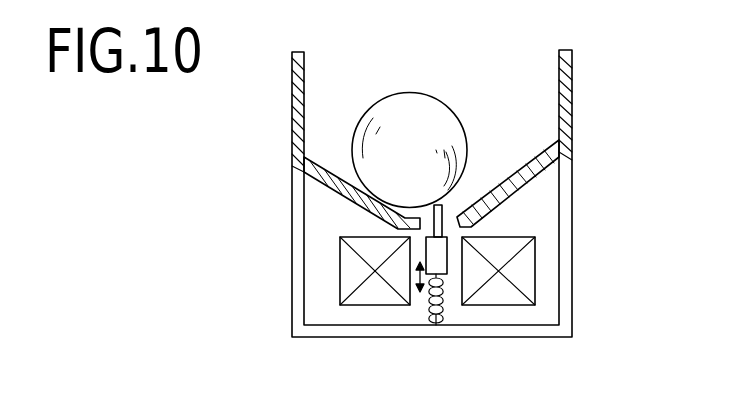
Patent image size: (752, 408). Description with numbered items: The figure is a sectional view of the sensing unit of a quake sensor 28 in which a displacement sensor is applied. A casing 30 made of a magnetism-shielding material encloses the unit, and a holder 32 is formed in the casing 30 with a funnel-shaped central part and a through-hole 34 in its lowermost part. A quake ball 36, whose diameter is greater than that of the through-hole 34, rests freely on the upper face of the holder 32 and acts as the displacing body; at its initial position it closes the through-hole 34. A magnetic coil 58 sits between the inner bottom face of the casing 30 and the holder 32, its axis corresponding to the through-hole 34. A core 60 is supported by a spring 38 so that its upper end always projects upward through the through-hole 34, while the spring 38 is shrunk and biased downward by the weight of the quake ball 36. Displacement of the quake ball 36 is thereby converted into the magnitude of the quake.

The quake sensor 28 is at (631, 117).
The casing 30 is at (573, 66).
The holder 32 is at (318, 154).
The through-hole 34 is at (450, 212).
The quake ball 36 is at (440, 103).
The spring 38 is at (430, 310).
The magnetic coil 58 is at (535, 250).
The core 60 is at (447, 262).